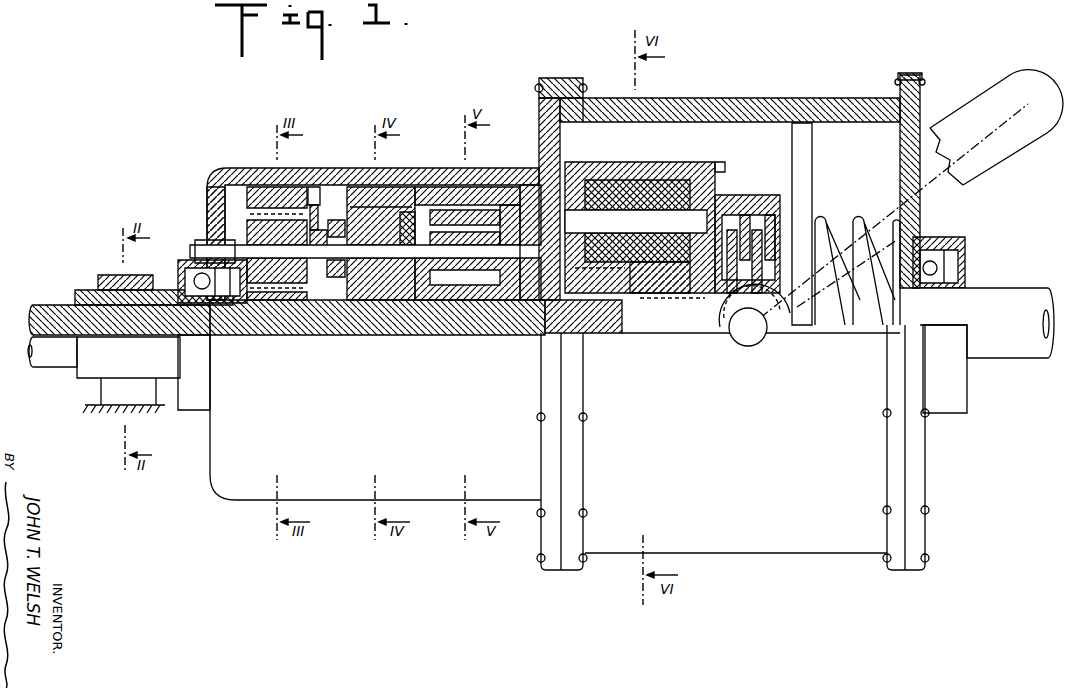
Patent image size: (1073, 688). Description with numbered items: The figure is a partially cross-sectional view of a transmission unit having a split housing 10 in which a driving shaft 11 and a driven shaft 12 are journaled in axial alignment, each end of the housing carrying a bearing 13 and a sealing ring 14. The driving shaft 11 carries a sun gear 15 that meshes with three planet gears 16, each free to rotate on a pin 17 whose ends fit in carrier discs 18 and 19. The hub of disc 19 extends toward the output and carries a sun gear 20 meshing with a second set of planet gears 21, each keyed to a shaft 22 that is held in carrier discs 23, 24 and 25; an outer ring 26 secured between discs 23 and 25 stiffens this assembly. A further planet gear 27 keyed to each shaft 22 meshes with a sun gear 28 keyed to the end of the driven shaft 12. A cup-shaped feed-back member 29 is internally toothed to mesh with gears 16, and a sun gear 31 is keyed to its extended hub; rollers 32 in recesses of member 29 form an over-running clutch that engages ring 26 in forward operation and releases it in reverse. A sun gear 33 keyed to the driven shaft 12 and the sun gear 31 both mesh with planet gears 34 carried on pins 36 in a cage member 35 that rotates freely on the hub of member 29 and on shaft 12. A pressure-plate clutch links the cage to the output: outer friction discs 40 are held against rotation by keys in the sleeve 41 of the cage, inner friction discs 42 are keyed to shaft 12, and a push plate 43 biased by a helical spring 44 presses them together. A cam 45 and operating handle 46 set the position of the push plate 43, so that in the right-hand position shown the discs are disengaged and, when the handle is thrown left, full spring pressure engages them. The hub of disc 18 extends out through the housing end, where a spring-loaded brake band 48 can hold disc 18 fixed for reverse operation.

The housing 10 is at (527, 348).
The driving shaft 11 is at (40, 308).
The driven shaft 12 is at (1015, 300).
The bearing 13 is at (196, 268).
The sealing ring 14 is at (185, 283).
The pinion or sun gear 15 is at (268, 300).
The idler or planet gear 16 is at (250, 226).
The shaft or pin 17 is at (235, 255).
The disc or carrier 18 is at (222, 228).
The disc or carrier 19 is at (318, 230).
The pinion or sun gear 20 is at (372, 300).
The idler or planet gear 21 is at (357, 230).
The shaft 22 is at (542, 242).
The disc or carrier 23 is at (410, 235).
The disc or carrier 24 is at (331, 230).
The disc or carrier 25 is at (505, 225).
The outer ring 26 is at (470, 220).
The idler or planet gear 27 is at (490, 210).
The pinion or sun gear 28 is at (466, 300).
The feed-back member 29 is at (262, 185).
The pinion or sun gear 31 is at (570, 263).
The roller 32 is at (428, 228).
The pinion or sun gear 33 is at (670, 290).
The idler or planet gear 34 is at (650, 195).
The cage member 35 is at (686, 180).
The pin or shaft 36 is at (618, 210).
The outer friction disc 40 is at (760, 212).
The outwardly extending sleeve 41 is at (738, 212).
The inner friction disc 42 is at (728, 300).
The clutch or push plate 43 is at (810, 158).
The helical spring 44 is at (820, 220).
The cam 45 is at (735, 333).
The operating handle 46 is at (1000, 88).
The brake band 48 is at (108, 275).